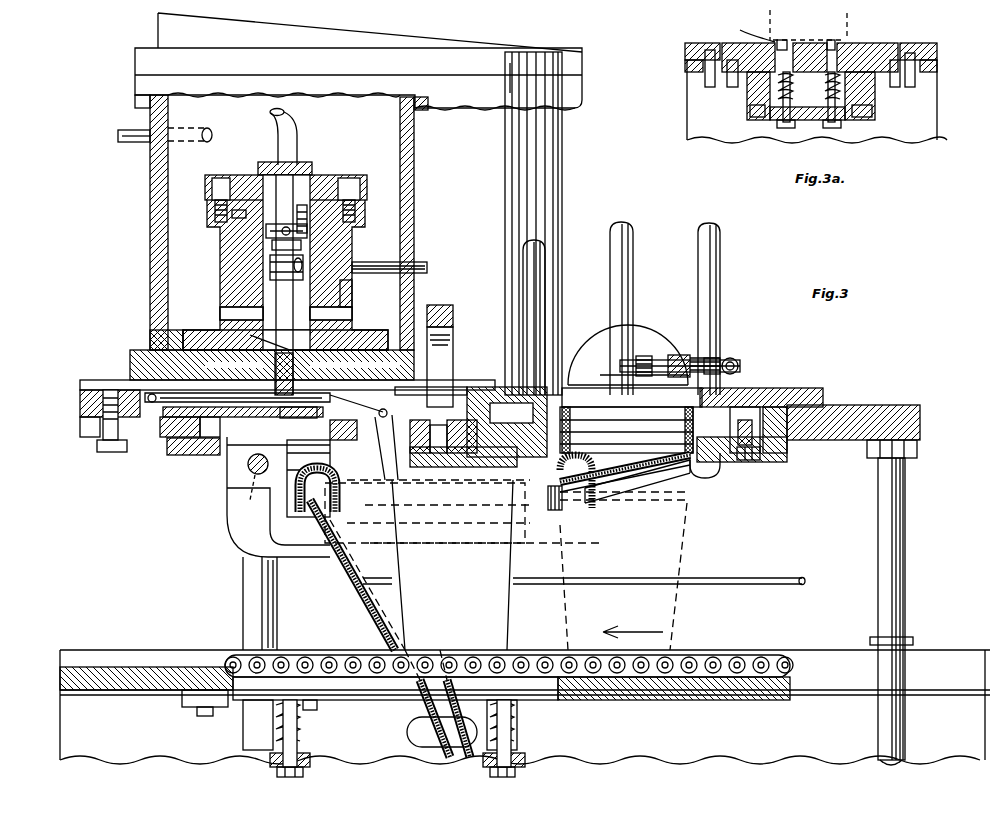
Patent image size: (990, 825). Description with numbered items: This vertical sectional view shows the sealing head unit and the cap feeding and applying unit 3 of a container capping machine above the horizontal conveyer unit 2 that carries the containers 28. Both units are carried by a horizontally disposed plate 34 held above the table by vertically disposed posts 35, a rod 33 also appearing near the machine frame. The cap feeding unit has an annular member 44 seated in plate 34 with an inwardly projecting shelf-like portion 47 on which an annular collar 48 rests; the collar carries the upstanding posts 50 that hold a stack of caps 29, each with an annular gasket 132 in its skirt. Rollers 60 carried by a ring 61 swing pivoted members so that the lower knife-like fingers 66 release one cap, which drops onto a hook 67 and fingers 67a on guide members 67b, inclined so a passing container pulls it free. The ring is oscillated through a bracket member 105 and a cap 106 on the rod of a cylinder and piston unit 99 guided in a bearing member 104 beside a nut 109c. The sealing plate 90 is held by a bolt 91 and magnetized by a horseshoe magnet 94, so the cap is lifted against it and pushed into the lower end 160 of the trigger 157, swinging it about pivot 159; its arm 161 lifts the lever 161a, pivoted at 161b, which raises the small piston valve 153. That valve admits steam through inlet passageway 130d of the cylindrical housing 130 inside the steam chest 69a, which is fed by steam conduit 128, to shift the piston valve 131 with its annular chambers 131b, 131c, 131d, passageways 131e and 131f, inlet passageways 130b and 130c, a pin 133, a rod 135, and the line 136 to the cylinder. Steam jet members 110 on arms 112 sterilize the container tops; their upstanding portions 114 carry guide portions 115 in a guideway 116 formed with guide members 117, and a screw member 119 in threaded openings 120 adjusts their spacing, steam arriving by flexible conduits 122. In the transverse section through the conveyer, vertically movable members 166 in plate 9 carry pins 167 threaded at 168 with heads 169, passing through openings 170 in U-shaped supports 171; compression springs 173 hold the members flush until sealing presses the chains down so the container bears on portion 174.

In FIG. 3, the horizontal conveyer unit 2 is at (535, 655).
In FIG. 3A, the horizontal conveyer unit 2 is at (778, 35).
In FIG. 3, the cap feeding and applying unit 3 is at (750, 400).
In FIG. 3, the plate of the conveyer unit 9 is at (150, 690).
In FIG. 3, the container 28 is at (500, 600).
In FIG. 3, the cap 29 is at (497, 467).
In FIG. 3, the rod 33 is at (762, 576).
In FIG. 3, the horizontally disposed plate 34 is at (80, 405).
In FIG. 3, the vertically disposed post 35 is at (890, 525).
In FIG. 3, the annular member 44 is at (810, 405).
In FIG. 3, the shelf-like portion 47 is at (748, 463).
In FIG. 3, the annular collar 48 is at (740, 405).
In FIG. 3, the upstanding post 50 is at (620, 255).
In FIG. 3, the roller 60 is at (787, 452).
In FIG. 3, the ring 61 is at (770, 405).
In FIG. 3, the lower knife-like finger 66 is at (690, 490).
In FIG. 3, the hook 67 is at (712, 470).
In FIG. 3, the finger 67a is at (618, 498).
In FIG. 3, the guide member 67b is at (598, 495).
In FIG. 3, the steam chest 69a is at (414, 135).
In FIG. 3, the sealing plate 90 is at (470, 467).
In FIG. 3, the bolt 91 is at (455, 400).
In FIG. 3, the horseshoe magnet 94 is at (440, 305).
In FIG. 3, the cylinder and piston unit 99 is at (590, 328).
In FIG. 3, the bearing member 104 is at (675, 358).
In FIG. 3, the bracket member 105 is at (740, 348).
In FIG. 3, the cap 106 is at (738, 363).
In FIG. 3, the nut 109c is at (644, 355).
In FIG. 3, the steam jet member 110 is at (370, 493).
In FIG. 3, the arm 112 is at (370, 520).
In FIG. 3, the upstanding portion 114 is at (270, 540).
In FIG. 3, the guide portion 115 is at (245, 440).
In FIG. 3, the guideway 116 is at (160, 432).
In FIG. 3, the guide member 117 is at (167, 450).
In FIG. 3, the screw member 119 is at (240, 468).
In FIG. 3, the threaded opening 120 is at (254, 484).
In FIG. 3, the flexible conduit 122 is at (370, 615).
In FIG. 3, the steam conduit 128 is at (216, 120).
In FIG. 3, the cylindrical housing 130 is at (268, 285).
In FIG. 3, the inlet passageway 130b is at (240, 318).
In FIG. 3, the inlet passageway 130c is at (335, 312).
In FIG. 3, the steam inlet passageway 130d is at (150, 340).
In FIG. 3, the piston valve 131 is at (265, 232).
In FIG. 3, the annular chamber 131b is at (265, 244).
In FIG. 3, the annular chamber 131c is at (352, 322).
In FIG. 3, the intermediate chamber 131d is at (268, 262).
In FIG. 3, the passageway 131e is at (268, 295).
In FIG. 3, the passageway 131f is at (352, 222).
In FIG. 3, the annular gasket 132 is at (305, 240).
In FIG. 3, the pin 133 is at (305, 270).
In FIG. 3, the rod 135 is at (430, 268).
In FIG. 3, the line 136 is at (290, 133).
In FIG. 3, the small piston valve 153 is at (240, 438).
In FIG. 3, the trigger 157 is at (440, 453).
In FIG. 3, the pivot 159 is at (385, 415).
In FIG. 3, the lower end of trigger 160 is at (380, 430).
In FIG. 3, the horizontally extending arm 161 is at (300, 402).
In FIG. 3, the lever 161a is at (220, 392).
In FIG. 3, the pivot 161b is at (185, 395).
In FIG. 3, the vertically movable member 166 is at (430, 675).
In FIG. 3A, the vertically movable member 166 is at (845, 50).
In FIG. 3A, the pin 167 is at (765, 118).
In FIG. 3, the threaded connection 168 is at (450, 720).
In FIG. 3A, the threaded connection 168 is at (755, 80).
In FIG. 3, the head 169 is at (488, 778).
In FIG. 3A, the head 169 is at (782, 128).
In FIG. 3, the opening 170 is at (265, 770).
In FIG. 3A, the opening 170 is at (855, 120).
In FIG. 3, the support 171 is at (312, 752).
In FIG. 3A, the support 171 is at (875, 115).
In FIG. 3, the compression spring 173 is at (305, 720).
In FIG. 3A, the compression spring 173 is at (838, 88).
In FIG. 3A, the portion of plate 174 is at (810, 45).